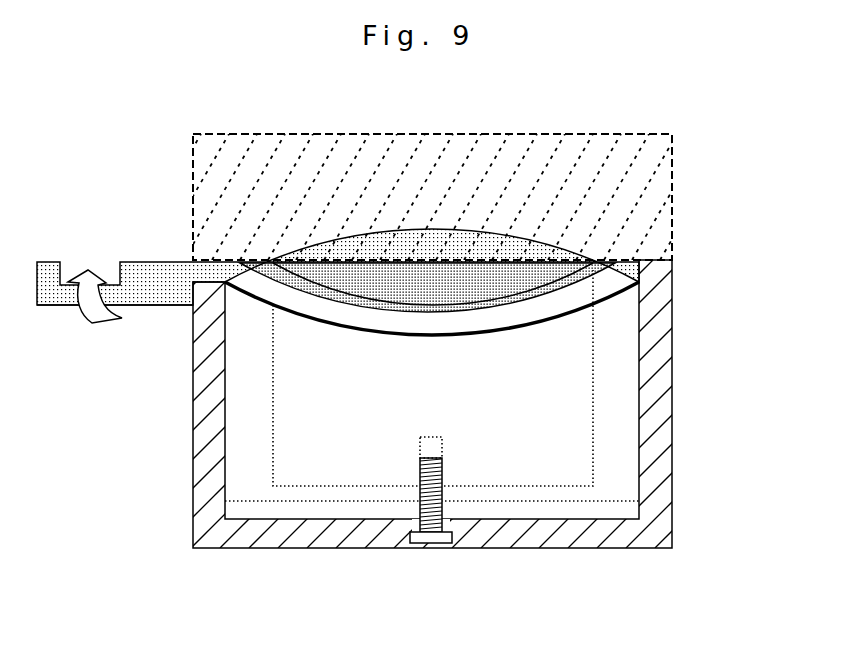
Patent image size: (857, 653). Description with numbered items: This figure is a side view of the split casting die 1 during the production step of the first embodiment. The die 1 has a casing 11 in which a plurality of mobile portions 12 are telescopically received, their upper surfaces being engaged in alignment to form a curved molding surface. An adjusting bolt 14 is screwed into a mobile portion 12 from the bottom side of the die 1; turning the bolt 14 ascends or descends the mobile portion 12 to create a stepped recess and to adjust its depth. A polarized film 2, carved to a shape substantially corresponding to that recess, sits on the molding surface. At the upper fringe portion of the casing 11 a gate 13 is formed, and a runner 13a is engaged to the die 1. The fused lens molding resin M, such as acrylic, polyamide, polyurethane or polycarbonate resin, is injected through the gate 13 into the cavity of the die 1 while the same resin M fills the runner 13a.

The casting die 1 is at (678, 250).
The polarized film 2 is at (552, 320).
The casing 11 is at (665, 465).
The mobile portion 12 is at (605, 388).
The gate 13 is at (186, 253).
The runner 13a is at (152, 306).
The adjusting bolt 14 is at (417, 514).
The fused lens molding resin M is at (116, 265).